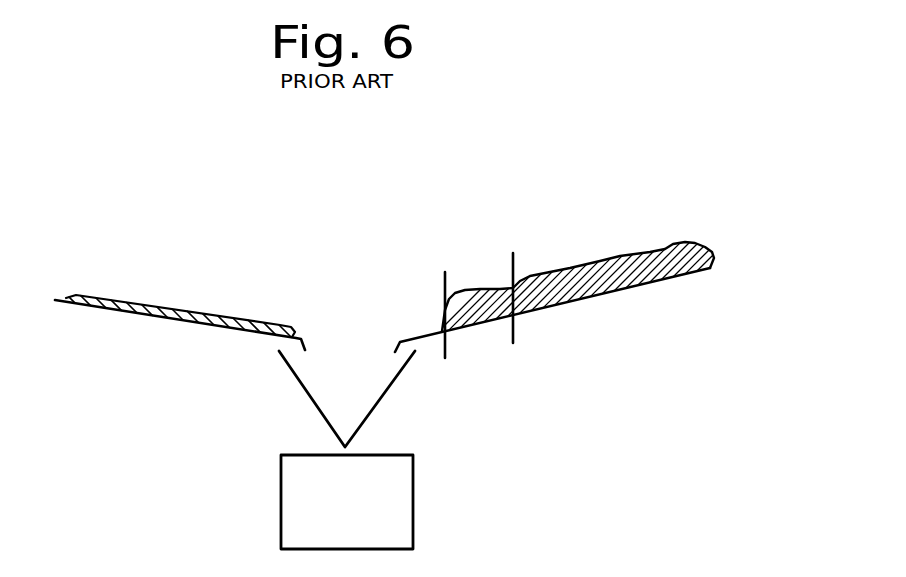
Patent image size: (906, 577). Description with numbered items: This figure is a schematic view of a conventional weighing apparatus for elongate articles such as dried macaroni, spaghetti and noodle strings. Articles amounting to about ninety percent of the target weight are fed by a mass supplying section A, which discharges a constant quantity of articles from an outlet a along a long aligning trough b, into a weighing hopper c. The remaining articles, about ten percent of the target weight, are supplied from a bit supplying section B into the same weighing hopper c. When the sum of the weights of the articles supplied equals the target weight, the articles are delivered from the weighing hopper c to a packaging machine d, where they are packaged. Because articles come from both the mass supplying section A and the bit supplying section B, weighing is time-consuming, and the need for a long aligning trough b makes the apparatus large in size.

The mass supplying section A is at (558, 248).
The bit supplying section B is at (181, 291).
The outlet a is at (480, 345).
The aligning trough b is at (584, 313).
The weighing hopper c is at (323, 384).
The packaging machine d is at (413, 481).